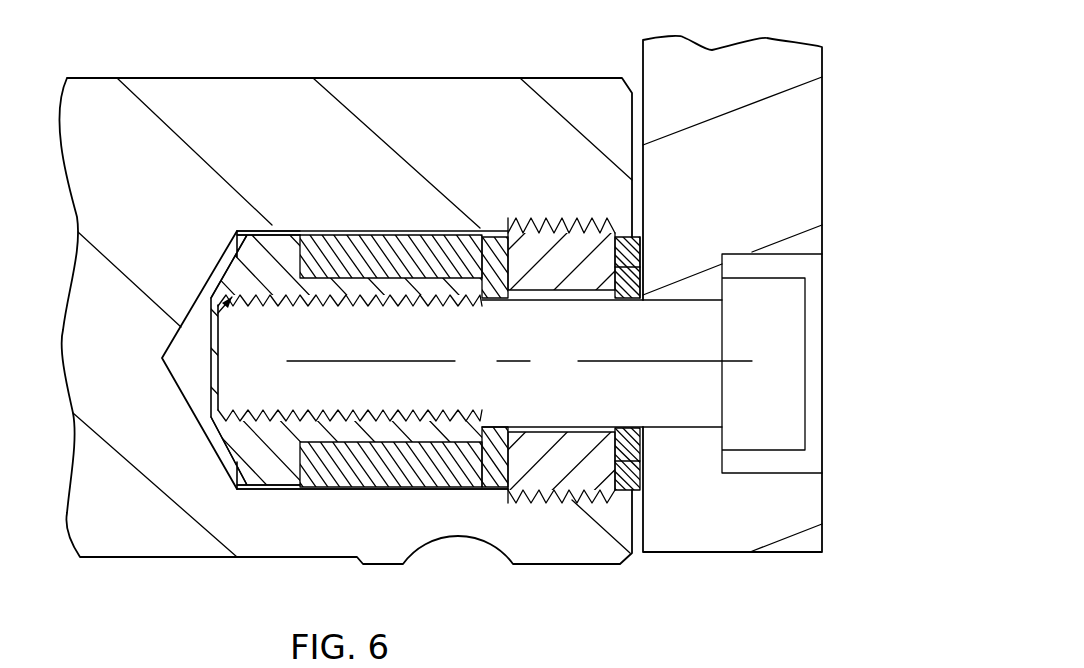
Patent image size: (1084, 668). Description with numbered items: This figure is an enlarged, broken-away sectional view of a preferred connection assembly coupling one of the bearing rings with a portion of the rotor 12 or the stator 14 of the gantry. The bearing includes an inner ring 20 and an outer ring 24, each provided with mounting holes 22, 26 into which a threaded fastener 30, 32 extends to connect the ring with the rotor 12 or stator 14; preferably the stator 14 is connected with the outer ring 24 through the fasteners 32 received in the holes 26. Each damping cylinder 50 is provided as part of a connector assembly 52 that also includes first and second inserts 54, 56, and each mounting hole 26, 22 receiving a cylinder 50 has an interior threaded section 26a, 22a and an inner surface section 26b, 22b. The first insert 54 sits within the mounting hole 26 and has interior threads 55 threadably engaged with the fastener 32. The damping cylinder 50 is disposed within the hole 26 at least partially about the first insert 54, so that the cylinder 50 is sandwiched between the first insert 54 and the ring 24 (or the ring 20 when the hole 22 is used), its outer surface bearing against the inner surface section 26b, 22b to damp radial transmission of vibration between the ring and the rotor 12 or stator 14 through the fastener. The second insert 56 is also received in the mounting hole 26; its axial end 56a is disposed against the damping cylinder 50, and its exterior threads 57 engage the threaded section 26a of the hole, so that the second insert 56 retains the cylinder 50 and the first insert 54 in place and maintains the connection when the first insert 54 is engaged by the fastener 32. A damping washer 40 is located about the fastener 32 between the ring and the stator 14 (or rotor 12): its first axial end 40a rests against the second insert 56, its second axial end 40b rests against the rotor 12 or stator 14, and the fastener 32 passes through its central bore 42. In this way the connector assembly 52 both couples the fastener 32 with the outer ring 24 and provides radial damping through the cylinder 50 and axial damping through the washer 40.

The rotor 12 is at (788, 294).
The stator 14 is at (829, 163).
The inner ring 20 is at (345, 282).
The outer ring 24 is at (266, 76).
The mounting hole 22 is at (160, 360).
The mounting hole 26 is at (174, 369).
The interior threaded section 22a is at (561, 521).
The interior threaded section 26a is at (557, 491).
The inner surface section 22b is at (359, 481).
The inner surface section 26b is at (350, 484).
The fastener 30 is at (823, 363).
The fastener 32 is at (812, 320).
The damping washer 40 is at (661, 245).
The first axial end 40a is at (612, 475).
The second axial end 40b is at (644, 262).
The central bore 42 is at (622, 301).
The damping cylinder 50 is at (351, 229).
The connector assembly 52 is at (346, 357).
The first insert 54 is at (270, 229).
The interior threads 55 is at (262, 305).
The second insert 56 is at (557, 351).
The axial end 56a is at (488, 236).
The exterior threads 57 is at (578, 221).